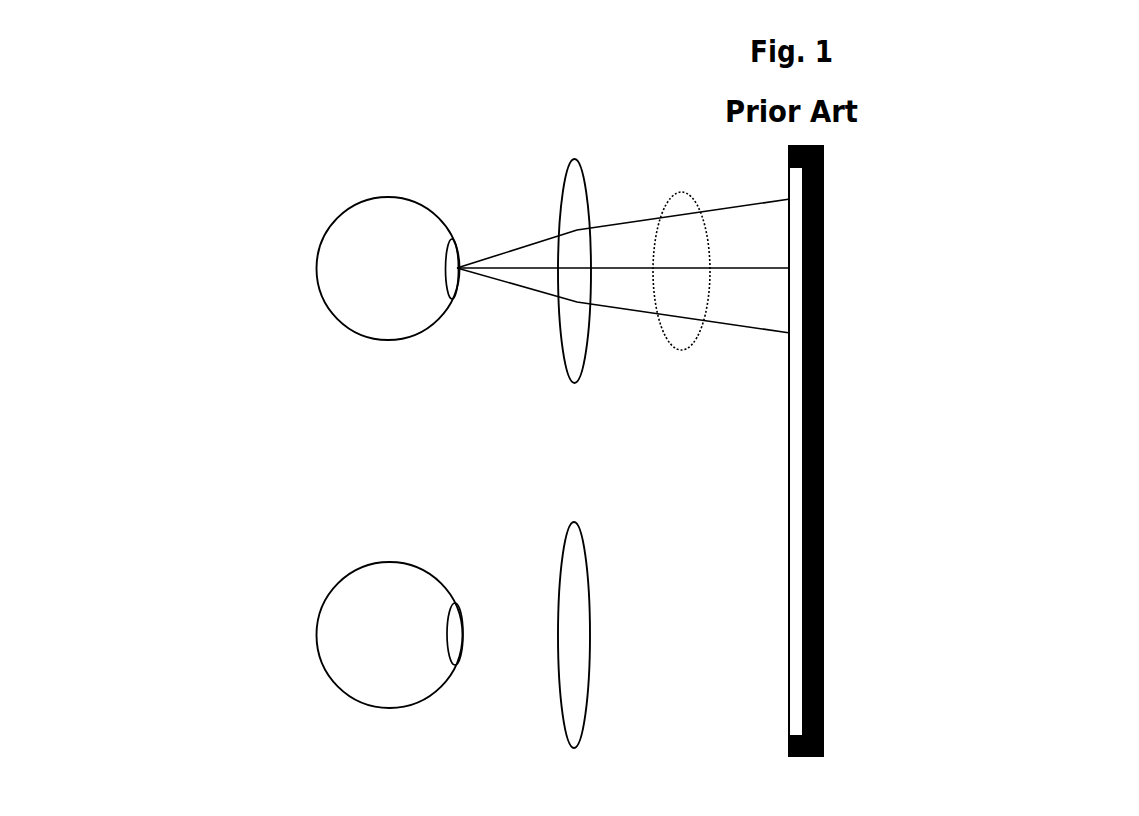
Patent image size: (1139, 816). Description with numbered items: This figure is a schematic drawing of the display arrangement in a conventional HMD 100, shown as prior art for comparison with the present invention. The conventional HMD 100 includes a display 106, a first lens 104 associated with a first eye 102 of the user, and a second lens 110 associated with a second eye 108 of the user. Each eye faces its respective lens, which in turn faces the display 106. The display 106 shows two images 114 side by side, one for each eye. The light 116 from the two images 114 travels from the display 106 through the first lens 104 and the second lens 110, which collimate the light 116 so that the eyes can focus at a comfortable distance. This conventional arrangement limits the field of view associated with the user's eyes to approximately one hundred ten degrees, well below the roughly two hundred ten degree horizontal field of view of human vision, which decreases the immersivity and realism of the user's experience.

The conventional HMD 100 is at (1047, 180).
The first eye 102 is at (340, 230).
The first lens 104 is at (572, 196).
The display 106 is at (825, 211).
The second eye 108 is at (330, 606).
The second lens 110 is at (572, 567).
The images 114 is at (788, 417).
The light 116 is at (666, 208).